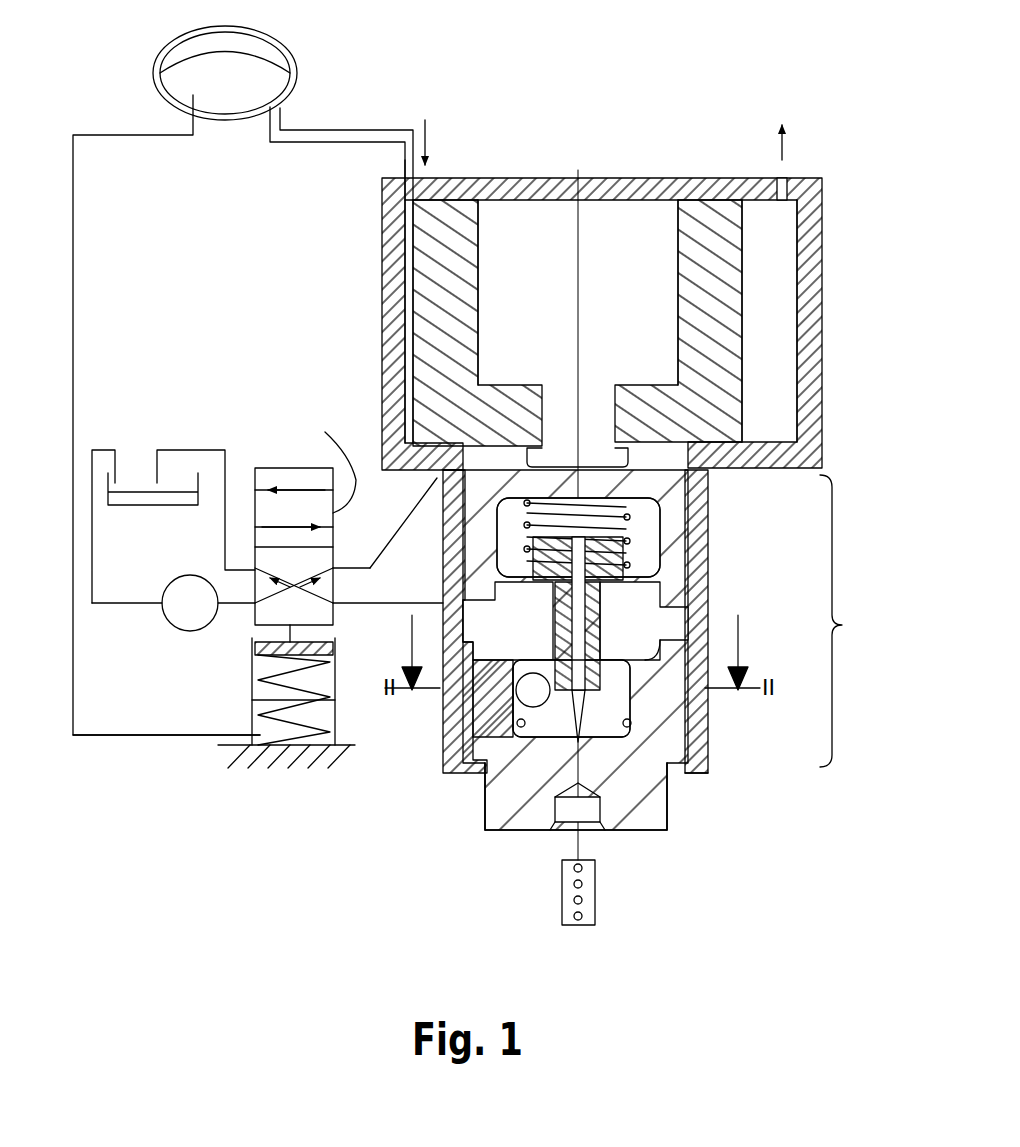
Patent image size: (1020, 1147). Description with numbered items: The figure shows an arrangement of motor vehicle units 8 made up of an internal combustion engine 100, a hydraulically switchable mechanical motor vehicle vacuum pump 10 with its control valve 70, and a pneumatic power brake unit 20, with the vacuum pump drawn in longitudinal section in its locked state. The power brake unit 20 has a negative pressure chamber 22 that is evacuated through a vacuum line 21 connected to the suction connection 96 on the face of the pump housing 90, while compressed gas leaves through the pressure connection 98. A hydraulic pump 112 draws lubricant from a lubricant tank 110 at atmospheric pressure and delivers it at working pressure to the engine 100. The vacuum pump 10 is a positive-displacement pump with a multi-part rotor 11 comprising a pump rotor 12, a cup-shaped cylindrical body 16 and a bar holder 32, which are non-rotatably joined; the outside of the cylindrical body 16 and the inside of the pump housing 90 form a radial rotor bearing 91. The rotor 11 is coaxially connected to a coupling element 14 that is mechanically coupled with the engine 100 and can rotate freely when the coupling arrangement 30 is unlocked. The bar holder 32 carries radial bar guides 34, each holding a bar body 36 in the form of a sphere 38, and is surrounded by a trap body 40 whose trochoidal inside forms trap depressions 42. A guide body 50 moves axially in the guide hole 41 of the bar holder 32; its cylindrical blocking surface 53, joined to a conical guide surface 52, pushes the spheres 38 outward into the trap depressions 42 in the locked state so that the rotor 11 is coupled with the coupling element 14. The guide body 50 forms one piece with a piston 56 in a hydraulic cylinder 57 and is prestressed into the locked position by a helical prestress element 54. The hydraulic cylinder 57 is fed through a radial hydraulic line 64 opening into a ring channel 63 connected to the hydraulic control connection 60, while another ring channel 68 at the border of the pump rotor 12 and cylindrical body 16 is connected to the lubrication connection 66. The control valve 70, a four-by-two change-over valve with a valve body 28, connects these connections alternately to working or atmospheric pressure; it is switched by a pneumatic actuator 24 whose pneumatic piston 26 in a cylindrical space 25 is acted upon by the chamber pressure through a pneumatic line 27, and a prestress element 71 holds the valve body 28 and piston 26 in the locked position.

The arrangement of motor vehicle units 8 is at (300, 825).
The motor vehicle vacuum pump 10 is at (700, 140).
The rotor 11 is at (598, 185).
The pump rotor 12 is at (750, 378).
The coupling element 14 is at (672, 812).
The cylindrical body 16 is at (680, 570).
The pneumatic power brake unit 20 is at (130, 70).
The vacuum line 21 is at (342, 128).
The negative pressure chamber 22 is at (180, 80).
The pneumatic actuator 24 is at (235, 682).
The cylindrical space 25 is at (330, 692).
The pneumatic piston 26 is at (365, 633).
The pneumatic line 27 is at (80, 262).
The valve body 28 is at (326, 458).
The coupling arrangement 30 is at (848, 621).
The bar holder 32 is at (705, 712).
The bar guide 34 is at (512, 745).
The bar body 36 is at (520, 800).
The sphere 38 is at (530, 712).
The trap body 40 is at (706, 748).
The guide hole 41 is at (700, 765).
The trap depression 42 is at (520, 700).
The guide body 50 is at (706, 650).
The conical guide surface 52 is at (663, 818).
The cylindrical blocking surface 53 is at (592, 800).
The prestress element 54 is at (706, 512).
The piston 56 is at (706, 578).
The hydraulic cylinder 57 is at (706, 620).
The hydraulic control connection 60 is at (447, 603).
The ring channel 63 is at (443, 635).
The radial hydraulic line 64 is at (480, 600).
The lubrication connection 66 is at (437, 470).
The ring channel 68 is at (415, 430).
The control valve 70 is at (268, 462).
The prestress element 71 is at (280, 697).
The pump housing 90 is at (828, 293).
The radial rotor bearing 91 is at (706, 542).
The suction connection 96 is at (407, 187).
The pressure connection 98 is at (785, 162).
The internal combustion engine 100 is at (555, 893).
The lubricant tank 110 is at (132, 445).
The hydraulic pump 112 is at (180, 630).